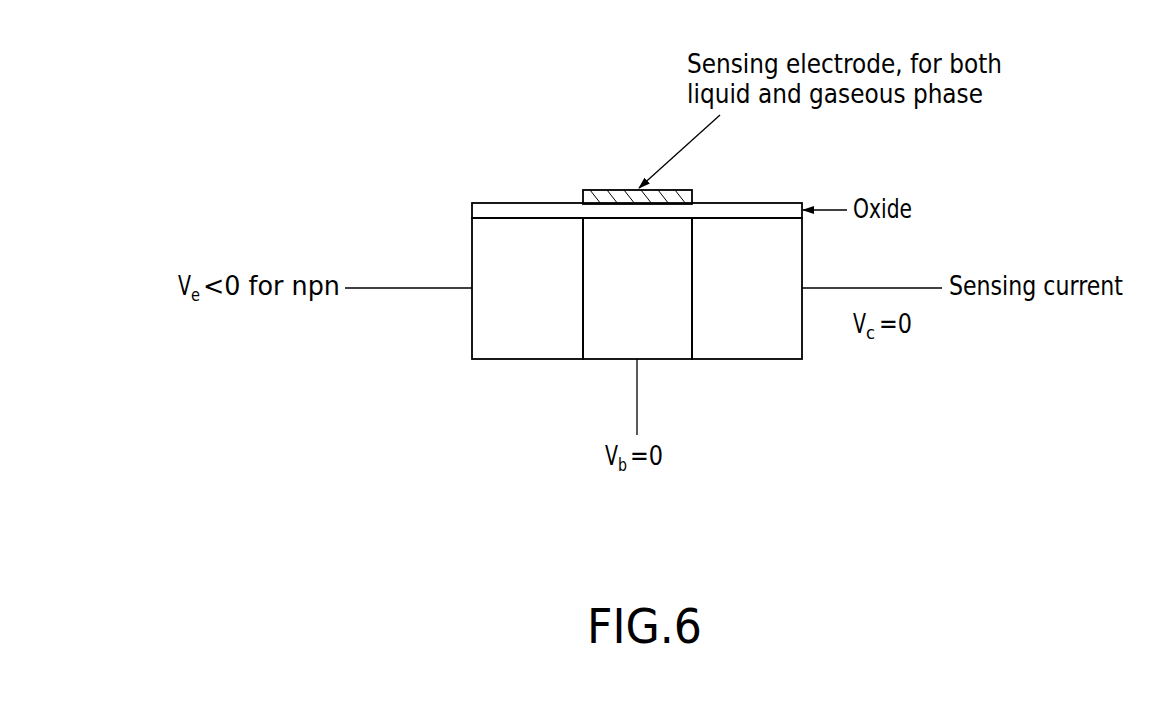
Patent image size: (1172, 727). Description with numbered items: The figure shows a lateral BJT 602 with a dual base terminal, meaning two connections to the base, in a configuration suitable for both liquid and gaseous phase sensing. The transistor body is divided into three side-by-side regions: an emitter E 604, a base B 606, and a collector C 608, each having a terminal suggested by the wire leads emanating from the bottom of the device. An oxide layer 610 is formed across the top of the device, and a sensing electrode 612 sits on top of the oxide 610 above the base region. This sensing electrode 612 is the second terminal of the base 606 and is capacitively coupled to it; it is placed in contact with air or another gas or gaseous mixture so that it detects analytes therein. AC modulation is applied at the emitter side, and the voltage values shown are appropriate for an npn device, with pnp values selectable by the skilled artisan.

The lateral BJT 602 is at (607, 337).
The emitter 604 is at (472, 258).
The base 606 is at (603, 359).
The collector 608 is at (760, 359).
The oxide layer 610 is at (472, 209).
The sensing electrode 612 is at (605, 188).